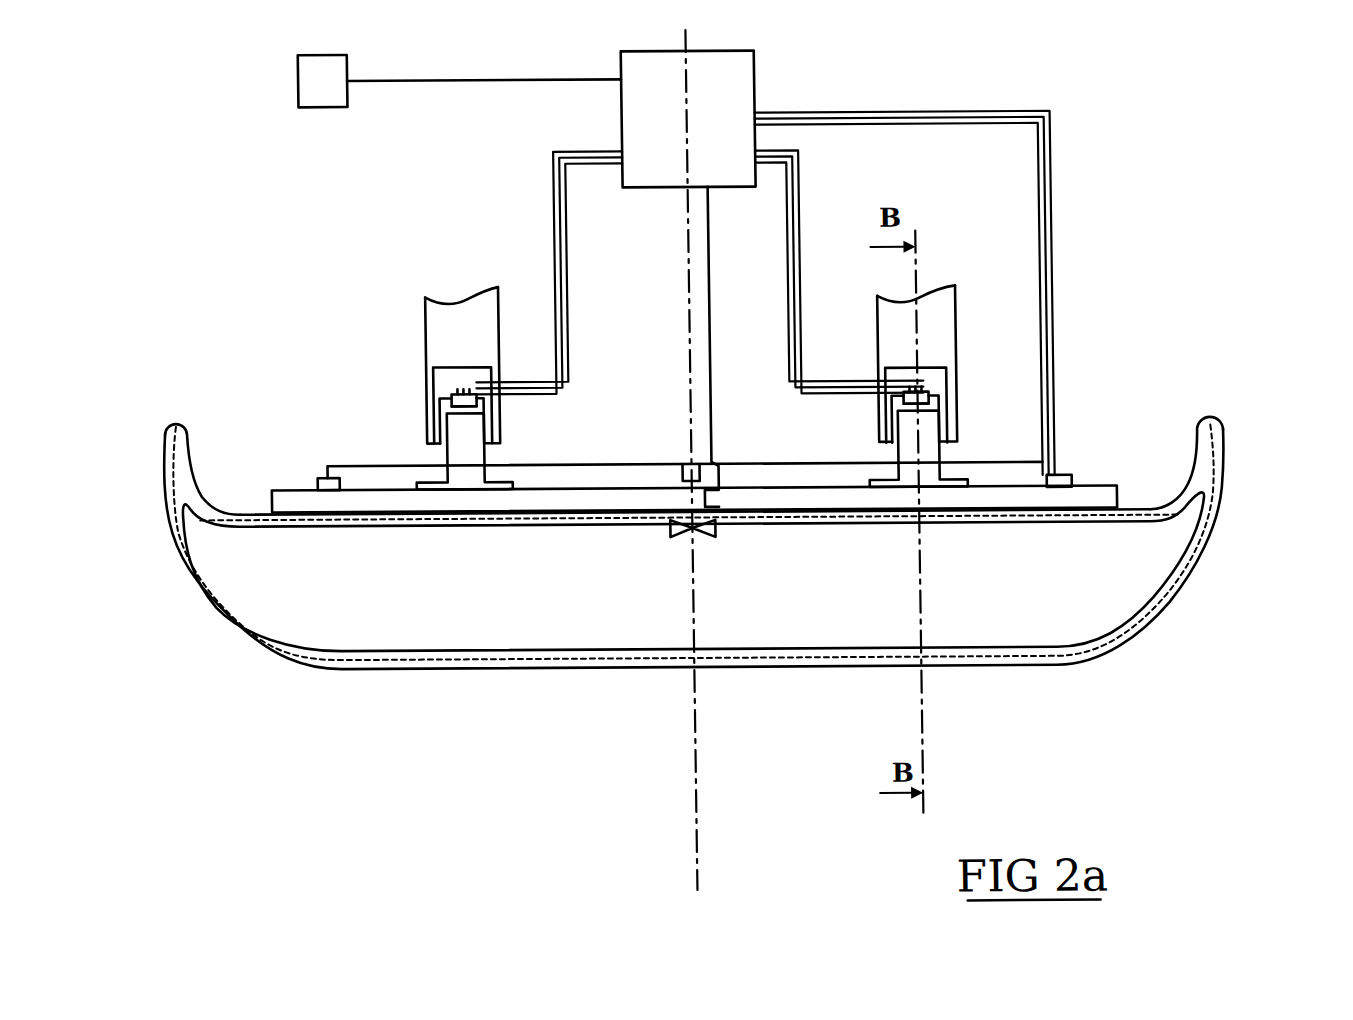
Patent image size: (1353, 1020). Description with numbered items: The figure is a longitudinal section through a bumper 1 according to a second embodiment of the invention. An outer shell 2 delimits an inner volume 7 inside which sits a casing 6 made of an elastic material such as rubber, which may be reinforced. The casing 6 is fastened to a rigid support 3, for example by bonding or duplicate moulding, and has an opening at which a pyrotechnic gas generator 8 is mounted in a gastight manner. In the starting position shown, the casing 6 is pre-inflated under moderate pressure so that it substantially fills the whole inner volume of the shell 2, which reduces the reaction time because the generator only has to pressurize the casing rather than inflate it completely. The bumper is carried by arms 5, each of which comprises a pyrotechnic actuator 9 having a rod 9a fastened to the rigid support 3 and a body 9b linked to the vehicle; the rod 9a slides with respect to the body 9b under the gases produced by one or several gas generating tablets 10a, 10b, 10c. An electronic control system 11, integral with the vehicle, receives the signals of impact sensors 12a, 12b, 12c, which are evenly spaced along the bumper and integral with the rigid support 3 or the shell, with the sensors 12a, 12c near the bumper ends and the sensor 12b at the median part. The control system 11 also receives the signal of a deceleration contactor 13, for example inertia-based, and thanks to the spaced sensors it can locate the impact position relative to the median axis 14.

The bumper 1 is at (476, 711).
The shell 2 is at (1213, 528).
The rigid support 3 is at (1086, 498).
The arm 5 is at (416, 316).
The casing 6 is at (1012, 658).
The inner volume 7 is at (1208, 470).
The pyrotechnic gas generator 8 is at (703, 537).
The pyrotechnic actuator 9 is at (960, 427).
The rod 9a is at (466, 453).
The body 9b is at (424, 383).
The gas generating tablet 10a is at (444, 399).
The gas generating tablet 10b is at (461, 397).
The gas generating tablet 10c is at (472, 397).
The electronic control system 11 is at (728, 97).
The impact sensor 12a is at (322, 478).
The impact sensor 12b is at (684, 476).
The impact sensor 12c is at (1062, 479).
The deceleration contactor 13 is at (324, 80).
The median axis 14 is at (693, 798).